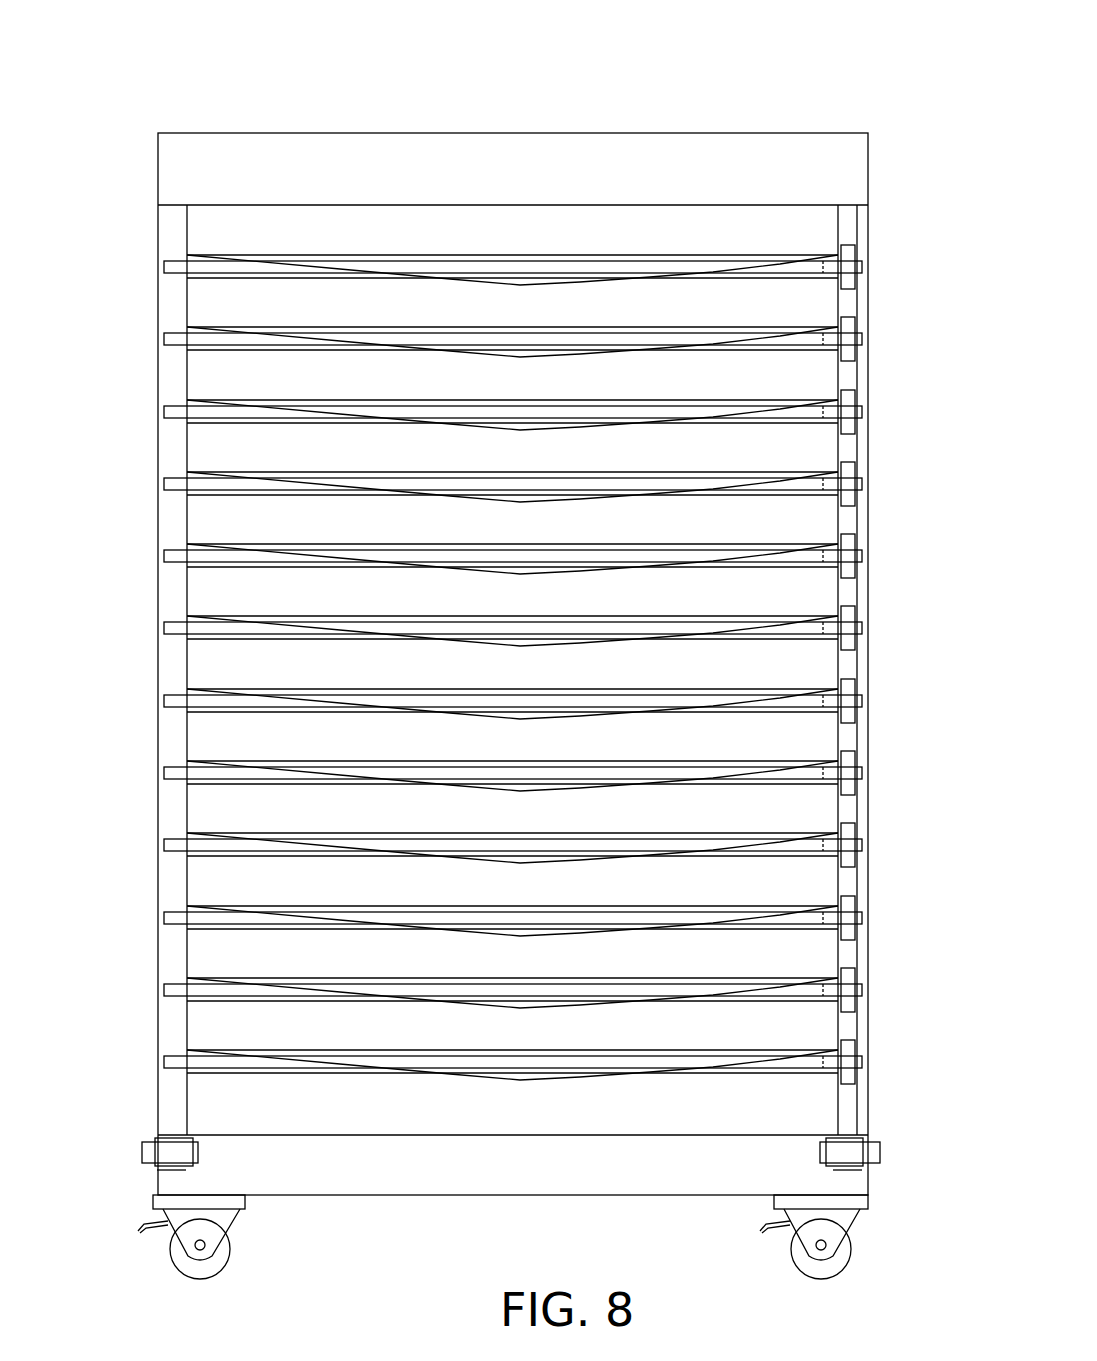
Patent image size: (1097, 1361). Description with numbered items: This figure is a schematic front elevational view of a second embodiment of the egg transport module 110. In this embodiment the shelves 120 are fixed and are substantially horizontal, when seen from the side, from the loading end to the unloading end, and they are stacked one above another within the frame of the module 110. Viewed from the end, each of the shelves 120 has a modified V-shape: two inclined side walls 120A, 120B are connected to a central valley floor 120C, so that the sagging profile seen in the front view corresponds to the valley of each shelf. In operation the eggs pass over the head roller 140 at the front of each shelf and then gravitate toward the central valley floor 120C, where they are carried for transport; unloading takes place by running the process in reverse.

The egg transport module 110 is at (790, 106).
The shelves 120 is at (551, 426).
The inclined side wall 120A is at (250, 337).
The inclined side wall 120B is at (775, 483).
The central valley floor 120C is at (480, 500).
The head roller 140 is at (193, 847).